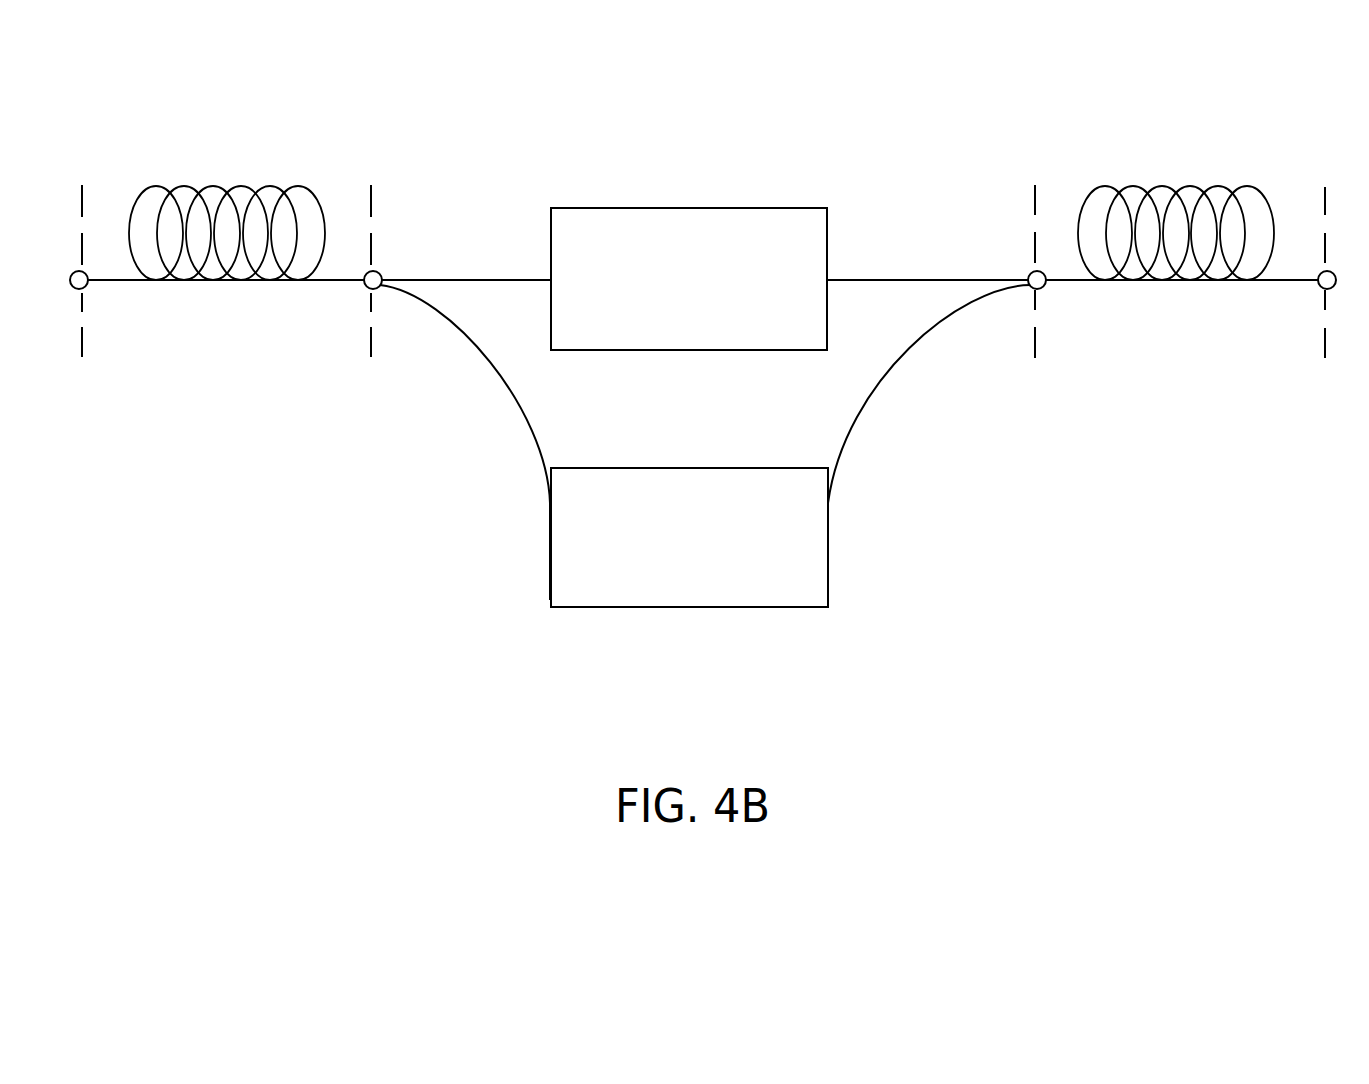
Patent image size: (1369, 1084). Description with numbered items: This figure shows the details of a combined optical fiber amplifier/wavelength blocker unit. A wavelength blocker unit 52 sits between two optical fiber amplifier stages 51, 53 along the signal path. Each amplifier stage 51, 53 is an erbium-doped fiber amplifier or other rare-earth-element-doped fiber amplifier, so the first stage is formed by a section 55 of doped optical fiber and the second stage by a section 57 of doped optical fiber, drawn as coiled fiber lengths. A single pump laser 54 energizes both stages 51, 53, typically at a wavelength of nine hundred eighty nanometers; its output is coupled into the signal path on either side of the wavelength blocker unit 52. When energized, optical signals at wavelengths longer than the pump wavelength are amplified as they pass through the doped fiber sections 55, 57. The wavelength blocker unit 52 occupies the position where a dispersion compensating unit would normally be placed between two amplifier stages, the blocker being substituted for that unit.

The optical fiber amplifier stage 51 is at (327, 351).
The wavelength blocker unit 52 is at (974, 374).
The optical fiber amplifier stage 53 is at (1276, 354).
The pump laser 54 is at (830, 555).
The section of optical fiber 55 is at (240, 187).
The section of optical fiber 57 is at (1197, 189).